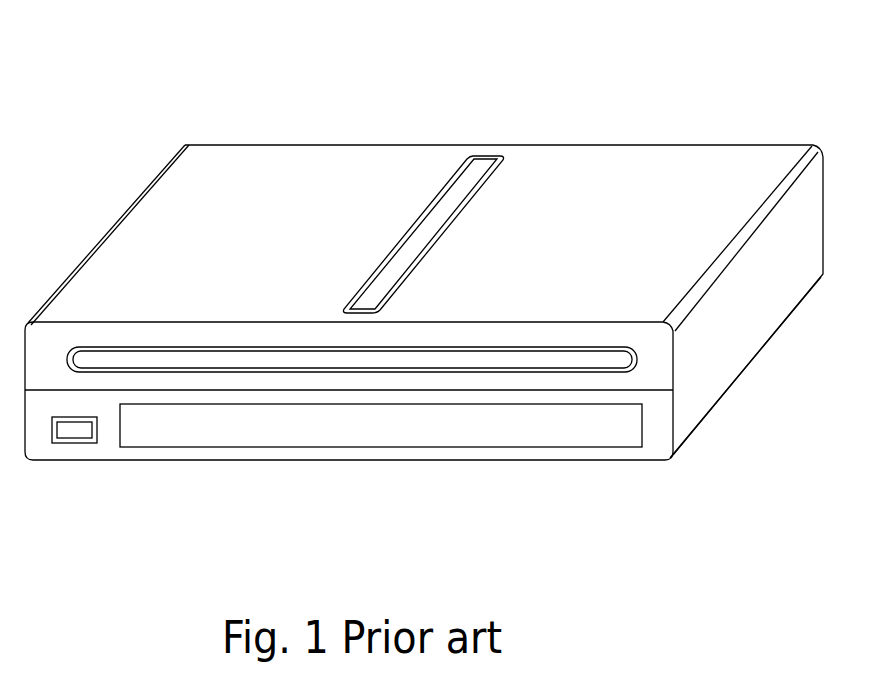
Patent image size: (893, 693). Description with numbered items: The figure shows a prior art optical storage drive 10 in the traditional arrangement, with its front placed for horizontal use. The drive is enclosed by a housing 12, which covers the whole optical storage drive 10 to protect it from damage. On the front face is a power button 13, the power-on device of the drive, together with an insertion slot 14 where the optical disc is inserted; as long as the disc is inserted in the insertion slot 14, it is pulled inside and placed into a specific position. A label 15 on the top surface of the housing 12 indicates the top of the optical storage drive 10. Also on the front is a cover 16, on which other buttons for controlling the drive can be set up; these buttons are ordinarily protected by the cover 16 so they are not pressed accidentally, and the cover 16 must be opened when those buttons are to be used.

The optical storage drive 10 is at (210, 74).
The housing 12 is at (704, 167).
The power button 13 is at (77, 440).
The insertion slot 14 is at (116, 361).
The label 15 is at (479, 173).
The cover 16 is at (445, 430).